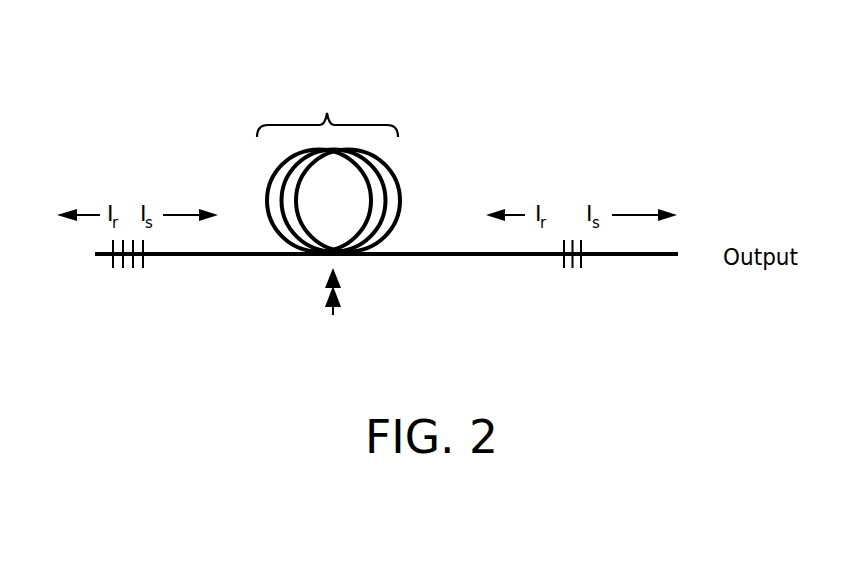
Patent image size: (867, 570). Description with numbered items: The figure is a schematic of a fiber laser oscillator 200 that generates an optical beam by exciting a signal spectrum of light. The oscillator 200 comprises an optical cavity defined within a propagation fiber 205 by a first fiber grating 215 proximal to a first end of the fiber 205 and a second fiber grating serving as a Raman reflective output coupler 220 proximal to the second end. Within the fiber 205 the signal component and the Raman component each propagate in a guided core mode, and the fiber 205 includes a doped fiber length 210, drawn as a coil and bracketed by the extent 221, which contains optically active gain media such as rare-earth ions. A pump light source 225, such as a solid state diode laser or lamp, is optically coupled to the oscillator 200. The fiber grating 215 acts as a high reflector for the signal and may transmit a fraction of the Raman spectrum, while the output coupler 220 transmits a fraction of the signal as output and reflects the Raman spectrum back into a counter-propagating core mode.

The laser oscillator 200 is at (146, 108).
The propagation fiber 205 is at (428, 255).
The doped fiber length 210 is at (400, 195).
The first fiber grating 215 is at (152, 298).
The Raman reflective output coupler 220 is at (593, 298).
The coil region length 221 is at (327, 110).
The pump light source 225 is at (355, 384).